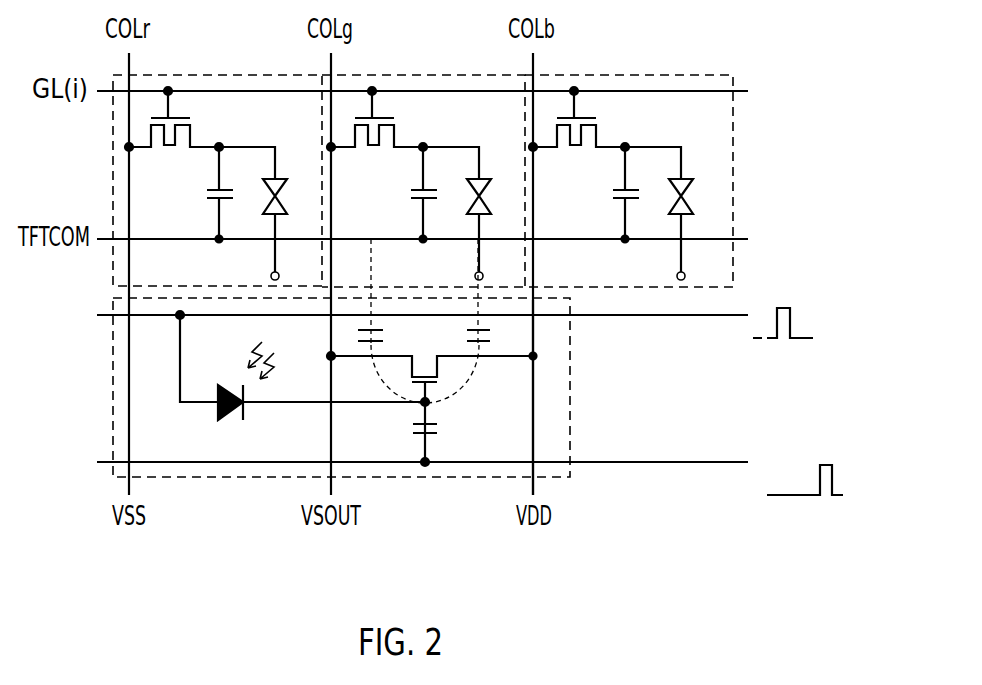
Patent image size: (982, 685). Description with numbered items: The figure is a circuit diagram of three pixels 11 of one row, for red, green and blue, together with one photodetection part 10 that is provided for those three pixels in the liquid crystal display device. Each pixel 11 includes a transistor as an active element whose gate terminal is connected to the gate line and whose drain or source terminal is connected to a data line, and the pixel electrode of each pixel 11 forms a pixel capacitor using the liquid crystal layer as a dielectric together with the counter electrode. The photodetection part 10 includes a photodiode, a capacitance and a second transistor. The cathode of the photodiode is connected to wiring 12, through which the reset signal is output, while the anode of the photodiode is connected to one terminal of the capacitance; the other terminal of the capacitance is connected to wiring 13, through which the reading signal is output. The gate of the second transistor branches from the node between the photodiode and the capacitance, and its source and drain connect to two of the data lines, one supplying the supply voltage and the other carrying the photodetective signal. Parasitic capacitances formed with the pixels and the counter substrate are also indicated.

The photodetection part 10 is at (113, 396).
The pixel 11 is at (213, 74).
The wiring 12 is at (628, 315).
The wiring 13 is at (630, 462).